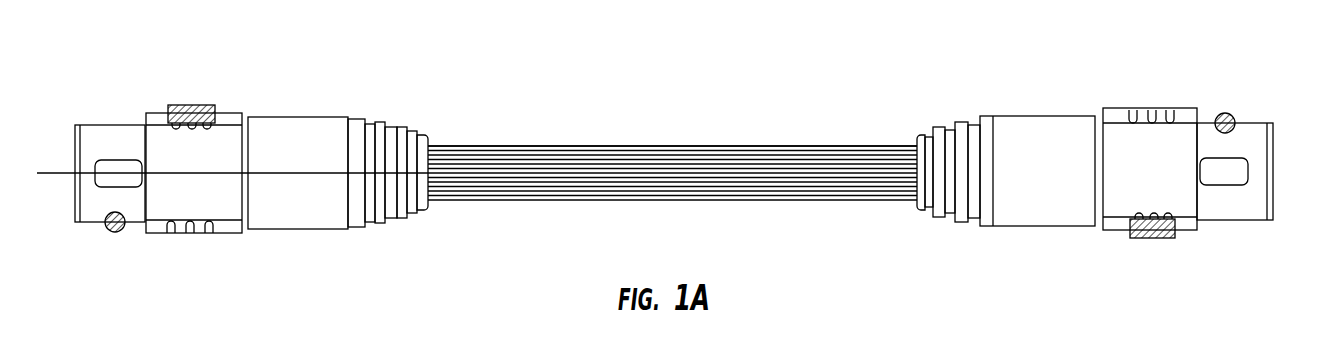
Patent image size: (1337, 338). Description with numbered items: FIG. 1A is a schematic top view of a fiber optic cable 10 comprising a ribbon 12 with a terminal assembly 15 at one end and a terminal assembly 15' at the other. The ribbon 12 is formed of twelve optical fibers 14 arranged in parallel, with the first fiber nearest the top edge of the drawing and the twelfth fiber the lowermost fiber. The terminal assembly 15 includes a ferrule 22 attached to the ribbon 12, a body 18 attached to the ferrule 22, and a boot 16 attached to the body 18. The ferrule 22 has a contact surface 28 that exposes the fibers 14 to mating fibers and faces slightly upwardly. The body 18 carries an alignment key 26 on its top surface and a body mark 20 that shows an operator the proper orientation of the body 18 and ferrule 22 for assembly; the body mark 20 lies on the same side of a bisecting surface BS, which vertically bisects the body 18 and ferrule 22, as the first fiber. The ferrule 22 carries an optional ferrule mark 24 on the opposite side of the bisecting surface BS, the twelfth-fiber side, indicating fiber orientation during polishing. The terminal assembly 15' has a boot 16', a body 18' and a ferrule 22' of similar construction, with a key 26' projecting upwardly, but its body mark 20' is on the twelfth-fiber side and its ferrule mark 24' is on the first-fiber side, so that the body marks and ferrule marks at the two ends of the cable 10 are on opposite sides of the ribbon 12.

The fiber optic cable 10 is at (836, 115).
The ribbon 12 is at (578, 138).
The optical fibers 14 is at (742, 146).
The terminal assembly 15 is at (363, 124).
The boot 16 is at (326, 144).
The body 18 is at (216, 127).
The body mark 20 is at (201, 84).
The ferrule 22 is at (111, 134).
The ferrule mark 24 is at (134, 246).
The alignment key 26 is at (106, 222).
The contact surface 28 is at (79, 232).
The bisecting surface BS is at (58, 173).
The terminal assembly 15' is at (1060, 122).
The boot 16' is at (1037, 128).
The body 18' is at (1150, 124).
The body mark 20' is at (1169, 252).
The ferrule 22' is at (1251, 153).
The ferrule mark 24' is at (1237, 89).
The key 26' is at (1268, 171).